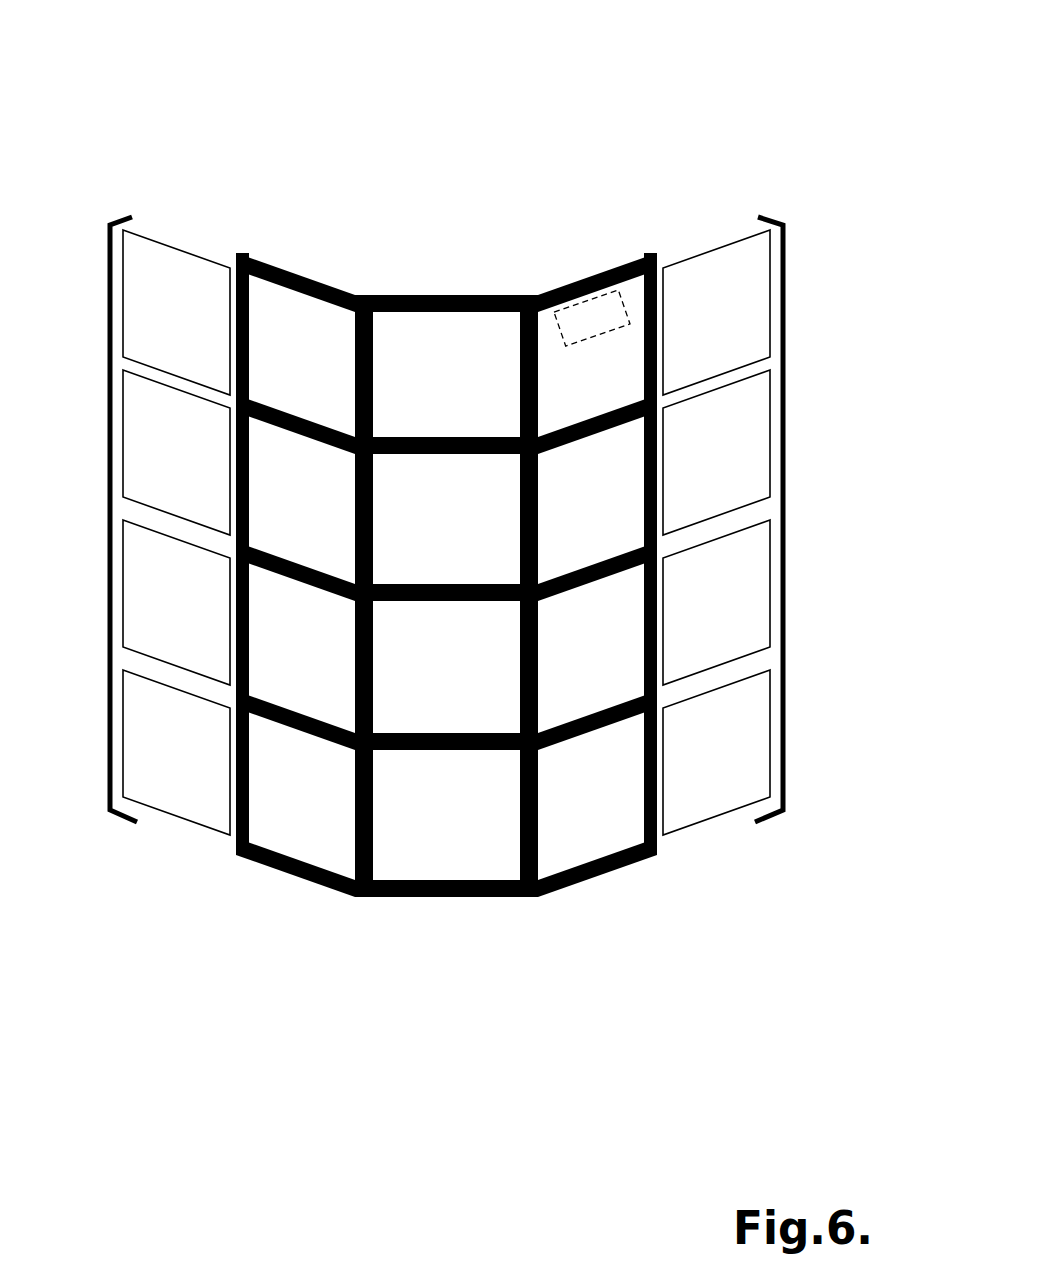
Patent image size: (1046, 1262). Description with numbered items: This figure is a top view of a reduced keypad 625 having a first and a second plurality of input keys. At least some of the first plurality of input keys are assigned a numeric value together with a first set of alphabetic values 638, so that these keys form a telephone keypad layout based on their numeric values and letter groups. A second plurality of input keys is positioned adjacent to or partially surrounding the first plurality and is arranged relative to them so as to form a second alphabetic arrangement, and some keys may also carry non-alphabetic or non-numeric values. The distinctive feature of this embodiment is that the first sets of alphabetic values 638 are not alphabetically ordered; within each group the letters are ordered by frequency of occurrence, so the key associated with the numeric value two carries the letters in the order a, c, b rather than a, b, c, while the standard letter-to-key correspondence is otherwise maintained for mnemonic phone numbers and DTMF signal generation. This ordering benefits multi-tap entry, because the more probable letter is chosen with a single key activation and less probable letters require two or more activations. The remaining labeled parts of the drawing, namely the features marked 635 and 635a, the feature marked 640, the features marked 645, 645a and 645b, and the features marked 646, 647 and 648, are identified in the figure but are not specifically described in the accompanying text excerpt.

The keypad 625 is at (735, 177).
The left keypad panel 635 is at (283, 367).
The bottom edge of left keypad panel 635a is at (355, 893).
The first sets of alphabetic values 638 is at (432, 403).
The right keypad panel 640 is at (620, 313).
The left side key (QW) 645 is at (142, 328).
The left side key column 645a is at (110, 413).
The right side key column 645b is at (786, 472).
The shift key 646 is at (192, 808).
The alt key 647 is at (755, 790).
The right side key (OP) 648 is at (753, 320).